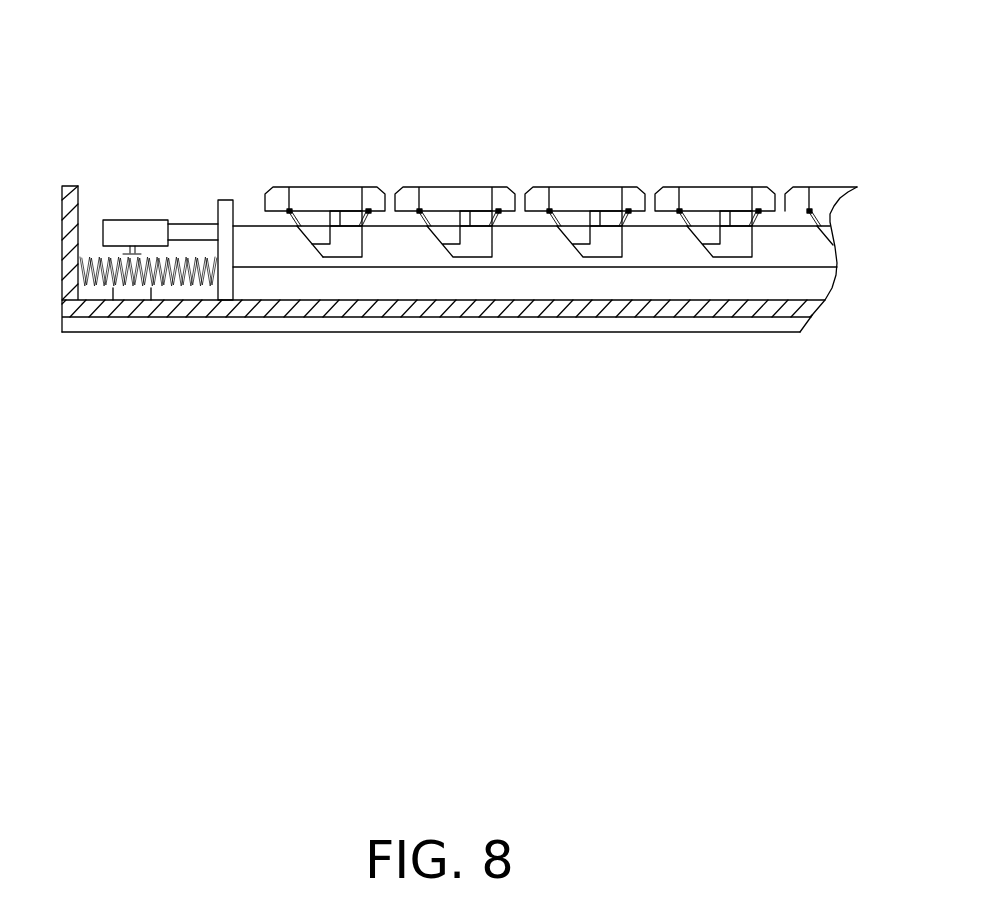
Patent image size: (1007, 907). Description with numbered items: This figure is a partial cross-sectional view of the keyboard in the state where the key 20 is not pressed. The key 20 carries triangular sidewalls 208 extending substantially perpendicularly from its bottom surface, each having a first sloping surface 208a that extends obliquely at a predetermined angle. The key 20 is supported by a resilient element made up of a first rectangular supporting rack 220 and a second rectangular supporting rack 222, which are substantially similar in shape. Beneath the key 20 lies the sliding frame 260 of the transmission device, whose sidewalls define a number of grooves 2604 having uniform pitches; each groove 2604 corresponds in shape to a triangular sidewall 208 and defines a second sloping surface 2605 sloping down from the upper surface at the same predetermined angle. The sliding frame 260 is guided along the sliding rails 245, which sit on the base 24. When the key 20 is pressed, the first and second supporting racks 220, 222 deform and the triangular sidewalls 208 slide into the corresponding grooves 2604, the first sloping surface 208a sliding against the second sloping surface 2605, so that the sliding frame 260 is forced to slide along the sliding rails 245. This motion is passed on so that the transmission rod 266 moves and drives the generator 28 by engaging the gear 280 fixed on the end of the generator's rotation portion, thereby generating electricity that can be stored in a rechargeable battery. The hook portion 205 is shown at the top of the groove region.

The key 20 is at (347, 192).
The base plate 24 is at (582, 307).
The generator 28 is at (133, 293).
The hook top portion 205 is at (465, 220).
The triangular sidewall 208 is at (320, 235).
The first sloping surface 208a is at (302, 214).
The first rectangular supporting rack 220 is at (416, 205).
The second rectangular supporting rack 222 is at (288, 217).
The sliding rail 245 is at (458, 285).
The sliding frame 260 is at (527, 243).
The transmission rod 266 is at (137, 240).
The gear 280 is at (128, 245).
The groove 2604 is at (605, 243).
The second sloping surface 2605 is at (305, 241).